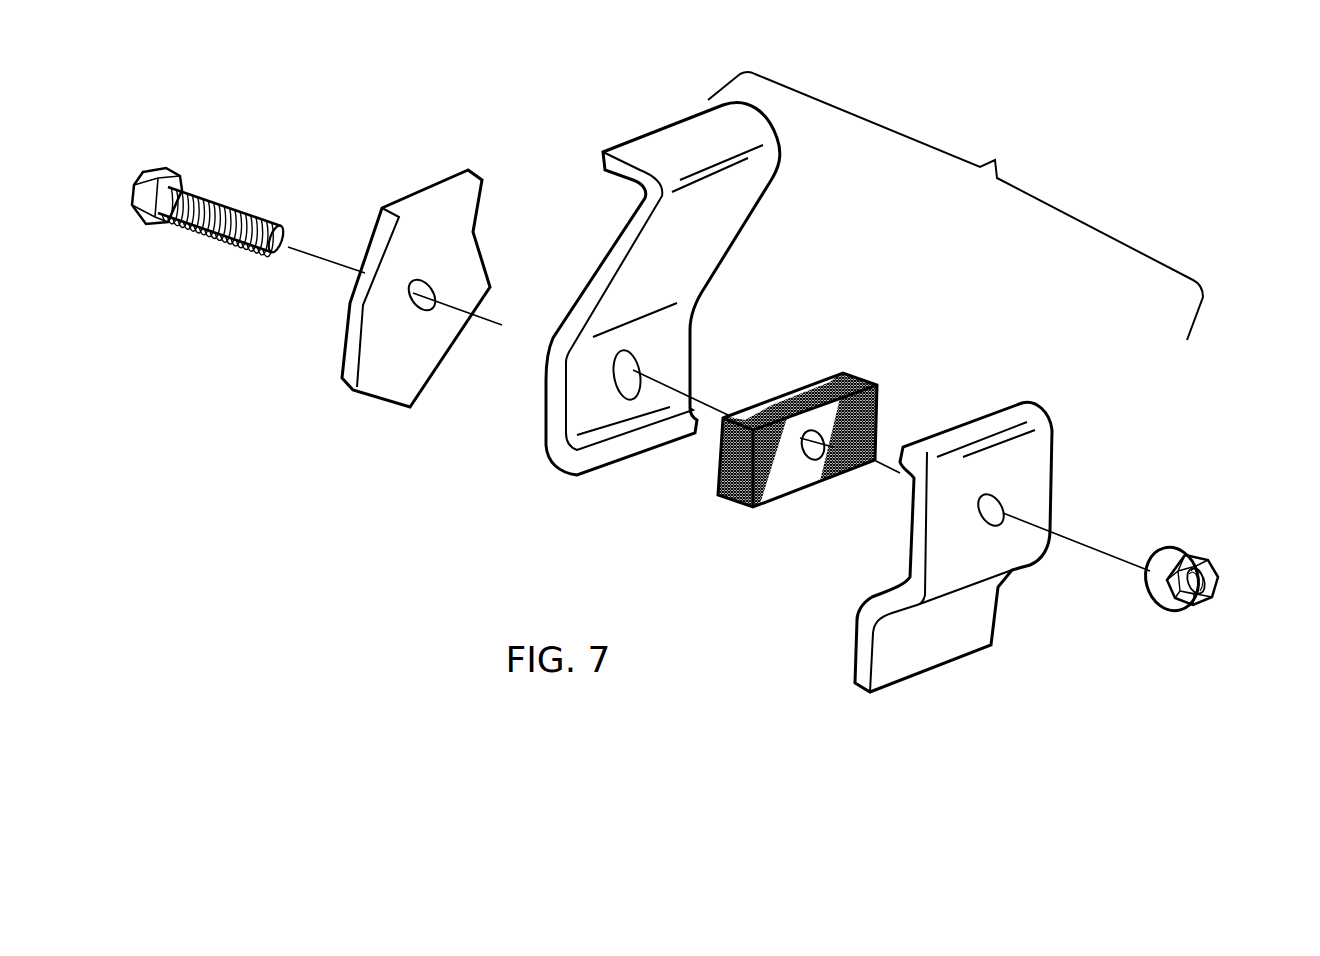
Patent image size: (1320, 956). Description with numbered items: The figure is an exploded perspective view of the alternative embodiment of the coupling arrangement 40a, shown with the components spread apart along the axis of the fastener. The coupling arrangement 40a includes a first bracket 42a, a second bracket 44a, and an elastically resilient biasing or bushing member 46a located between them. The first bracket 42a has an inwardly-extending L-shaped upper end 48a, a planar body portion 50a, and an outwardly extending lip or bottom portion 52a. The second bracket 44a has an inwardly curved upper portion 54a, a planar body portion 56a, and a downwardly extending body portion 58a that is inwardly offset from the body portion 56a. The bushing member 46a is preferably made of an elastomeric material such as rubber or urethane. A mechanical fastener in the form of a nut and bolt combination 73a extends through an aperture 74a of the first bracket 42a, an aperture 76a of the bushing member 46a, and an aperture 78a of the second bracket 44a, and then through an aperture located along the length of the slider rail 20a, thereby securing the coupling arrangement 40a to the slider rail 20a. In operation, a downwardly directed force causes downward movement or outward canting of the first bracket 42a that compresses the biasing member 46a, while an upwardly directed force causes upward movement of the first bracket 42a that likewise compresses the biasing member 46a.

The slider rail 20a is at (422, 288).
The coupling arrangement 40a is at (955, 206).
The first bracket 42a is at (660, 293).
The second bracket 44a is at (1006, 532).
The biasing or bushing member 46a is at (837, 423).
The L-shaped upper end 48a is at (677, 135).
The planar body portion 50a is at (548, 413).
The bottom portion 52a is at (618, 448).
The upper portion 54a is at (972, 433).
The planar body portion 56a is at (1017, 540).
The downwardly extending body portion 58a is at (928, 643).
The nut and bolt combination 73a is at (227, 202).
The aperture 74a is at (633, 365).
The aperture 76a is at (880, 398).
The aperture 78a is at (1005, 500).